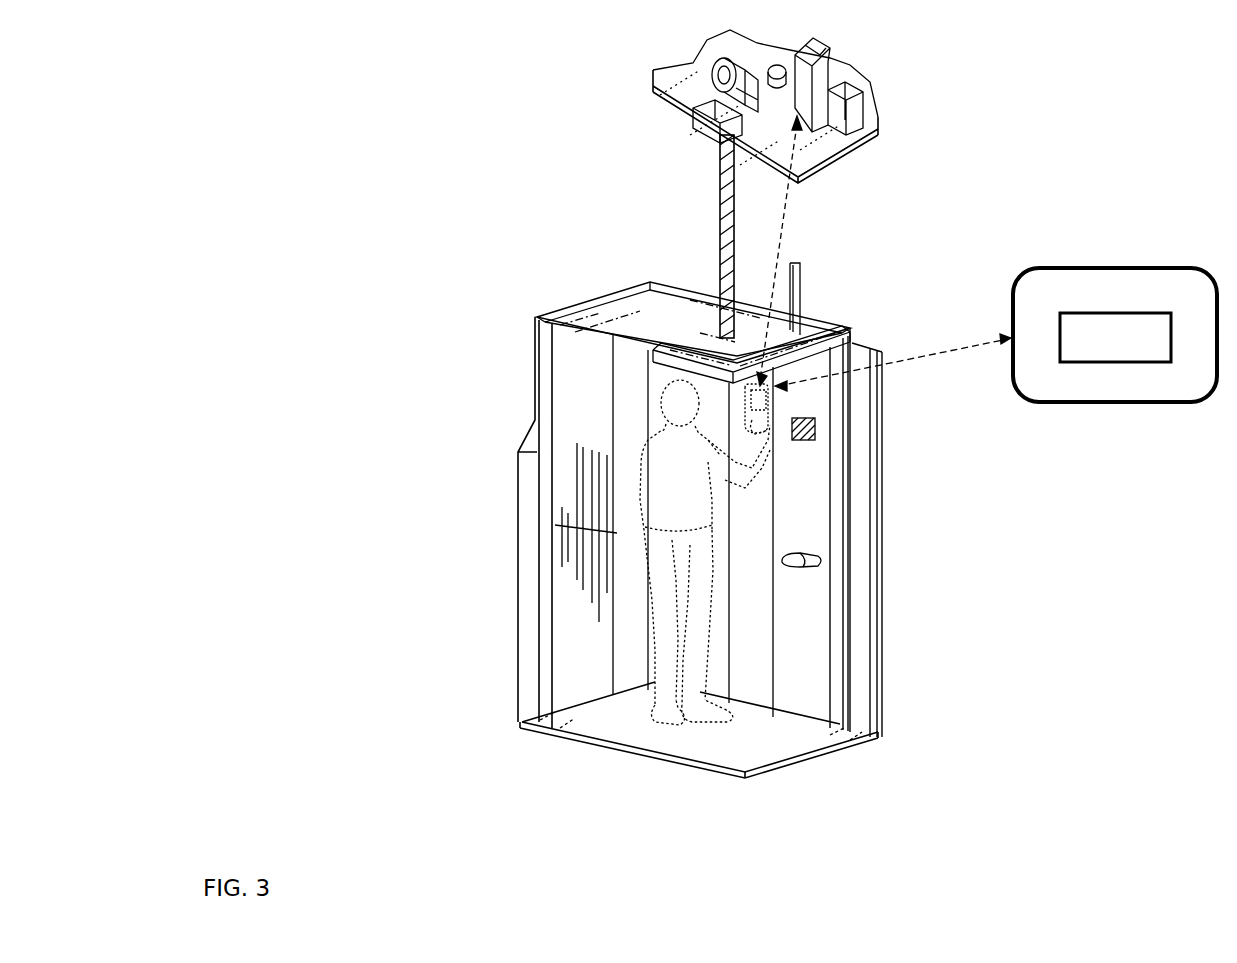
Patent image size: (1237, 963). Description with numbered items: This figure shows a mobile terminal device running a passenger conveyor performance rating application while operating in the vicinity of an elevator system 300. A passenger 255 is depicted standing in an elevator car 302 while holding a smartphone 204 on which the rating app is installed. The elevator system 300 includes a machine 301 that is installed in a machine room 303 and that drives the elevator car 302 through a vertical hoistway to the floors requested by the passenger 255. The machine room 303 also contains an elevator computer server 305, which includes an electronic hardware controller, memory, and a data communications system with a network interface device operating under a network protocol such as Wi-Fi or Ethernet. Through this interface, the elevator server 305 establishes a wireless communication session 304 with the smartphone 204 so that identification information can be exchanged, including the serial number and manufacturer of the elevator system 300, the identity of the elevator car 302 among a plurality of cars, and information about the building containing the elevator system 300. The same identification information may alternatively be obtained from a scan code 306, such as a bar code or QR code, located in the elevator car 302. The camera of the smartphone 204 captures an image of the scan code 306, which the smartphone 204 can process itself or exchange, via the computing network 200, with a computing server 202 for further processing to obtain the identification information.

The computing network 200 is at (1145, 265).
The computing server 202 is at (1093, 348).
The smartphone 204 is at (863, 355).
The passenger 255 is at (645, 483).
The elevator system 300 is at (443, 237).
The machine 301 is at (708, 96).
The elevator car 302 is at (525, 398).
The machine room 303 is at (693, 63).
The wireless communication session 304 is at (784, 224).
The elevator computer server 305 is at (838, 72).
The scan code 306 is at (794, 440).